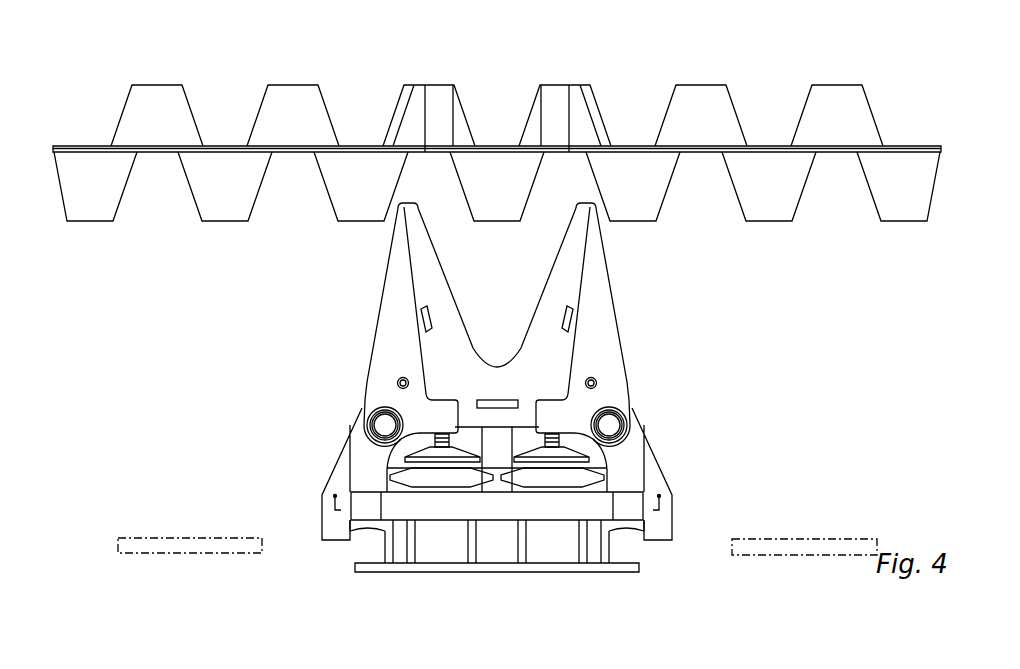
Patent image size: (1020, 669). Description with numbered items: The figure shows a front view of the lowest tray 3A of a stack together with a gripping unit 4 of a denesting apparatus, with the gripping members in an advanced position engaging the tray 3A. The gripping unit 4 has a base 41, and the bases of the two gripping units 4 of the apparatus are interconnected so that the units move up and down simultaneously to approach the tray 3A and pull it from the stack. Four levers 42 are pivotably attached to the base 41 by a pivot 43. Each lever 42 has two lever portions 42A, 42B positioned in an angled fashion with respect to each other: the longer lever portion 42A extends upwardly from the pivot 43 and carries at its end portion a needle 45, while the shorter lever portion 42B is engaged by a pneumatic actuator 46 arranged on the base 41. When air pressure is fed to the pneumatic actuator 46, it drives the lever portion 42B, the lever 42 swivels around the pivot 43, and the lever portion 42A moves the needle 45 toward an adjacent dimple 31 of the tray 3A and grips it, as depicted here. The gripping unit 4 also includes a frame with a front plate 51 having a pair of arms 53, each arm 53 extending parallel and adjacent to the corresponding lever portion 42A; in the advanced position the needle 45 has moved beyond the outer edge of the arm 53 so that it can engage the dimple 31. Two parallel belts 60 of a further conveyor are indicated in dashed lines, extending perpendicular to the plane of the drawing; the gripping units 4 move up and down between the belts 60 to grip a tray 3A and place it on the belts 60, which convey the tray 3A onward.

The tray 3A is at (910, 152).
The dimple 31 is at (341, 192).
The gripping unit 4 is at (276, 588).
The base 41 is at (597, 507).
The lever 42 is at (500, 232).
The lever portion 42A is at (400, 338).
The lever portion 42B is at (434, 414).
The pivot 43 is at (385, 425).
The needle 45 is at (393, 209).
The pneumatic actuator 46 is at (427, 469).
The front plate 51 is at (497, 380).
The arm 53 is at (433, 302).
The belt 60 is at (212, 547).